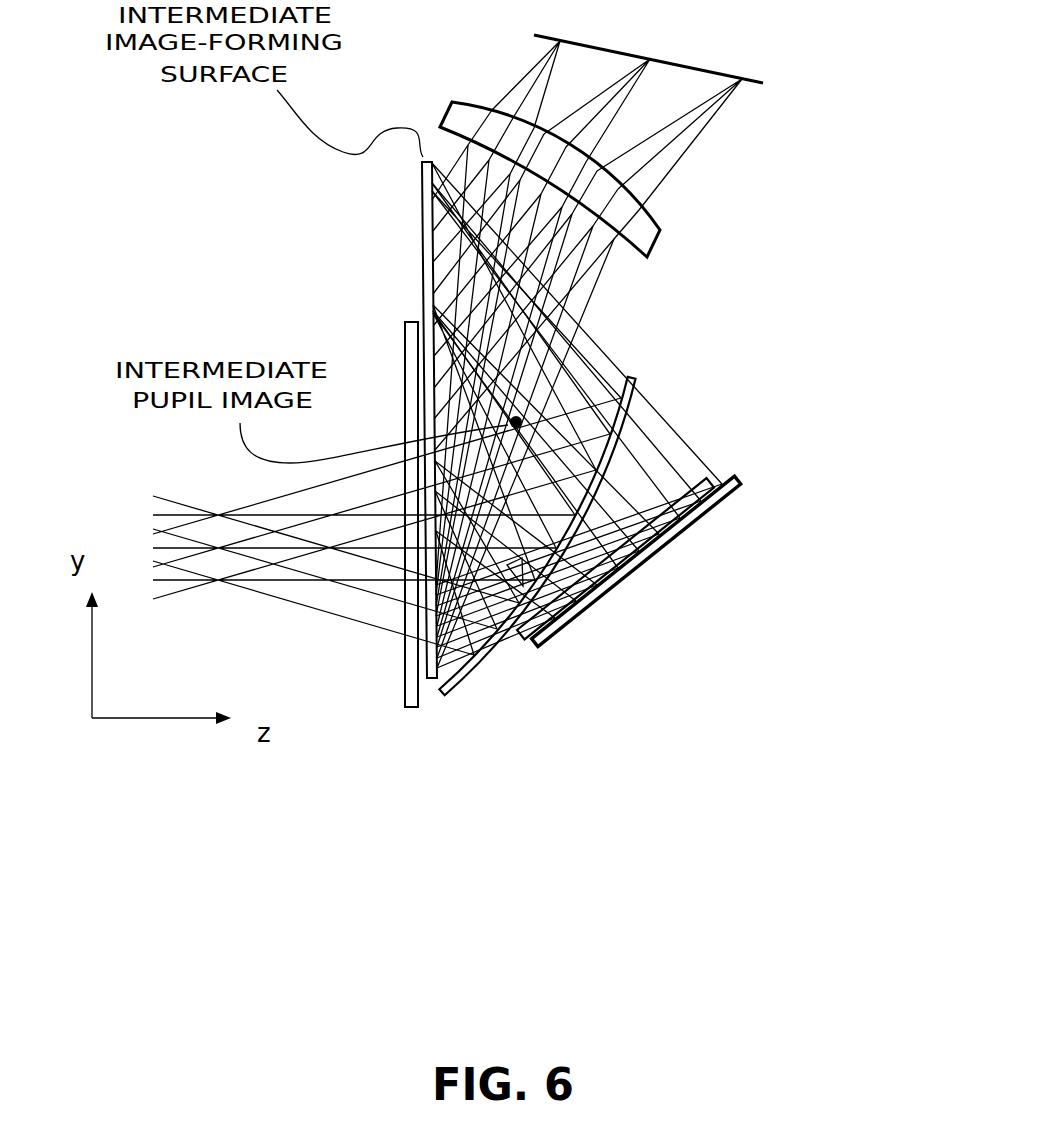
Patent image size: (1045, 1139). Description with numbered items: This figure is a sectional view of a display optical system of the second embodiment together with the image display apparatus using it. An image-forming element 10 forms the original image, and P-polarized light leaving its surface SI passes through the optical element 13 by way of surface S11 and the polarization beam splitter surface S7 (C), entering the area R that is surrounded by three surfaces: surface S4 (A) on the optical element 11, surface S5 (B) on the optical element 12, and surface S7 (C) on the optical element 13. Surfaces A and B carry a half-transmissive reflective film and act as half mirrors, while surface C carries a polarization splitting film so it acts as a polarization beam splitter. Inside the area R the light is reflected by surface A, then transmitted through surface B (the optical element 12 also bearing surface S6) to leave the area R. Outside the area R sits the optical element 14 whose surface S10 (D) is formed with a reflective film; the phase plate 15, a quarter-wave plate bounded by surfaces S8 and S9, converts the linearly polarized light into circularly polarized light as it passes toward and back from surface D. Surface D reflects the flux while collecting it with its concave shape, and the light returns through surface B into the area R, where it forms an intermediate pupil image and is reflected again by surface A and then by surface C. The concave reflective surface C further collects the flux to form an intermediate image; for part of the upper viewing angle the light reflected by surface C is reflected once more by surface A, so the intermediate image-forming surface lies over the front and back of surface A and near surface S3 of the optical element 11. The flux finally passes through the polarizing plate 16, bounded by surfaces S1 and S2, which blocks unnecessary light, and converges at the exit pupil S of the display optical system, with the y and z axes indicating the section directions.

The image-forming element 10 is at (697, 67).
The optical element 11 is at (428, 665).
The optical element 12 is at (500, 648).
The optical element 13 is at (657, 240).
The optical element 14 is at (593, 613).
The polarization conversion element (phase plate) 15 is at (703, 477).
The polarizing plate (polarizer) 16 is at (415, 672).
The exit pupil S is at (218, 508).
The surface of image-forming element SI is at (753, 80).
The surface S1 is at (405, 378).
The surface S2 is at (423, 327).
The surface S3 is at (420, 247).
The surface A (first surface) S4 is at (442, 668).
The surface B (third surface) S5 is at (627, 377).
The surface S6 is at (490, 645).
The surface C (second surface) S7 is at (672, 290).
The surface S8 is at (672, 476).
The surface S9 is at (728, 478).
The surface D (fourth surface) S10 is at (740, 480).
The surface S11 is at (477, 100).
The area (space) R is at (567, 623).